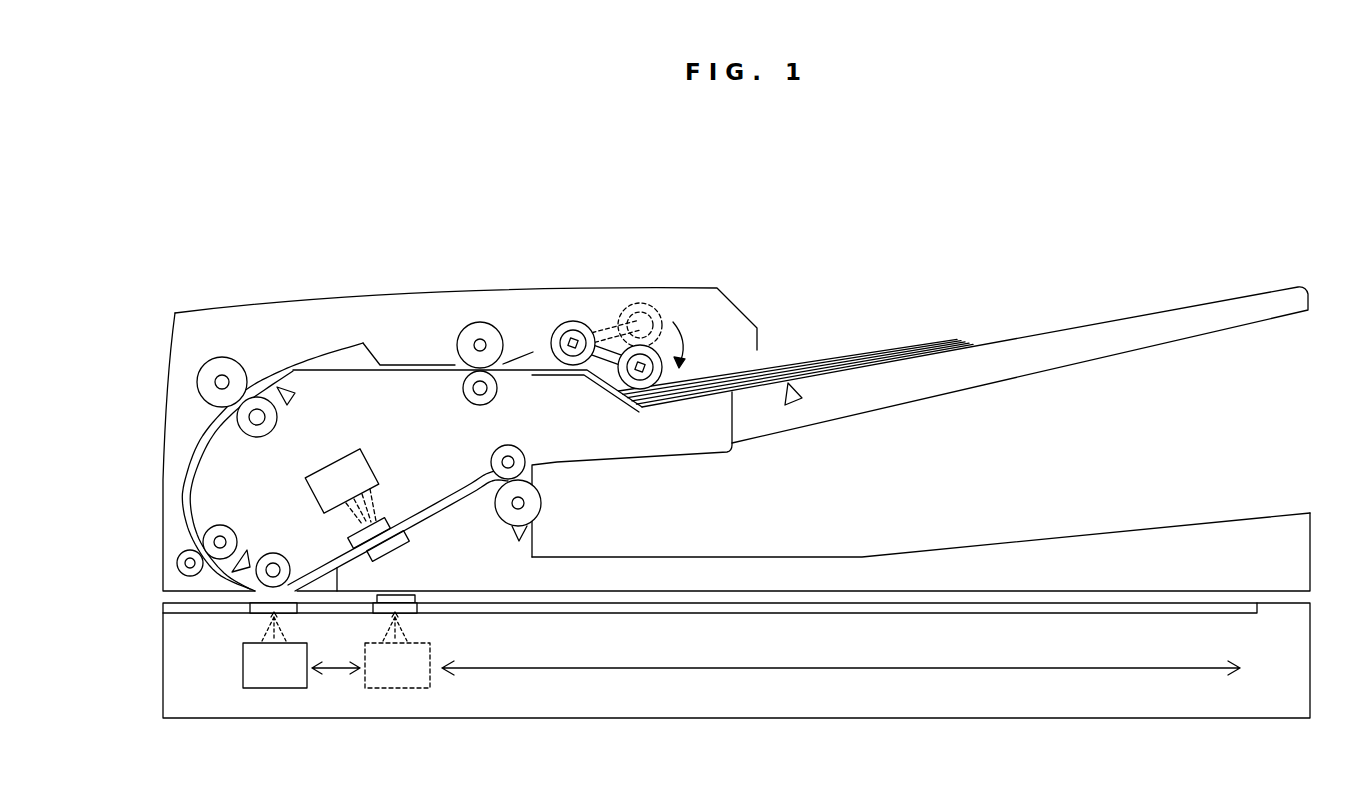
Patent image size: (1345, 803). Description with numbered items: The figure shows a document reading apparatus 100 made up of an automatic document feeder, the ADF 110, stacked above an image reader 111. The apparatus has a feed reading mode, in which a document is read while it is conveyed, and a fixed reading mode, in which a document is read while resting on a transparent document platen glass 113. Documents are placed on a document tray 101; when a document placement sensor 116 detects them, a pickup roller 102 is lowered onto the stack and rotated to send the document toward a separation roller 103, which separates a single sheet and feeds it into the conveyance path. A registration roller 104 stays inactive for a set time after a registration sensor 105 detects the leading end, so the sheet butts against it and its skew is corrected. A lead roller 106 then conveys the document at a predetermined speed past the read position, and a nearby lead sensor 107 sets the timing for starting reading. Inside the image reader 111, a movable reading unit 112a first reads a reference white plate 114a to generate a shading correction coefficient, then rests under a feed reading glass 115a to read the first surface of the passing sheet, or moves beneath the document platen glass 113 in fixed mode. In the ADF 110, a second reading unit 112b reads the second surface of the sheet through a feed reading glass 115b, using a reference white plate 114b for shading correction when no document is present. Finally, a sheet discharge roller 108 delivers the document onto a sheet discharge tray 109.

The document reading apparatus 100 is at (176, 172).
The document tray 101 is at (1052, 332).
The pickup roller 102 is at (660, 312).
The separation roller 103 is at (500, 333).
The registration roller 104 is at (232, 360).
The registration sensor 105 is at (295, 395).
The lead roller 106 is at (218, 527).
The lead sensor 107 is at (245, 552).
The sheet discharge roller 108 is at (542, 500).
The sheet discharge tray 109 is at (733, 558).
The automatic document feeder 110 is at (173, 312).
The image reader 111 is at (160, 608).
The reading unit 112a is at (283, 692).
The reading unit 112b is at (375, 453).
The document platen glass 113 is at (1238, 615).
The reference white plate 114a is at (420, 594).
The reference white plate 114b is at (398, 539).
The feed reading glass 115a is at (248, 610).
The feed reading glass 115b is at (390, 512).
The document placement sensor 116 is at (797, 400).